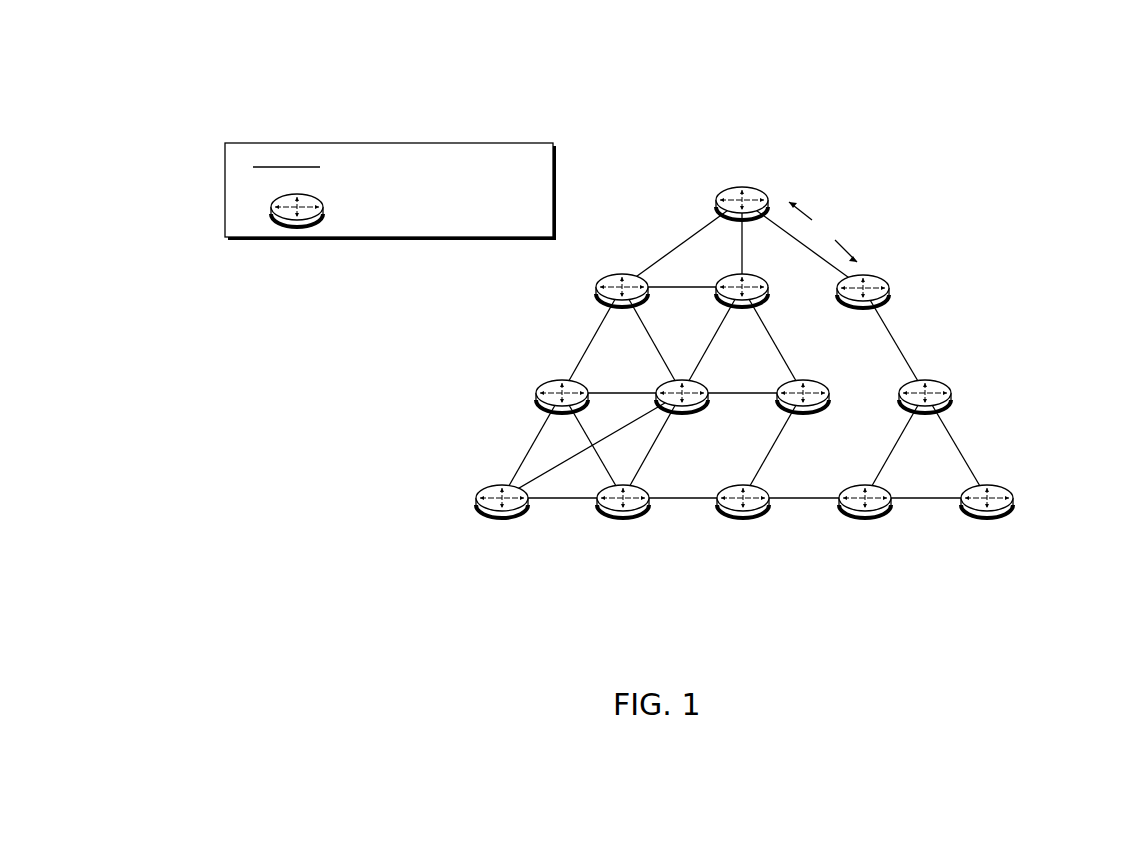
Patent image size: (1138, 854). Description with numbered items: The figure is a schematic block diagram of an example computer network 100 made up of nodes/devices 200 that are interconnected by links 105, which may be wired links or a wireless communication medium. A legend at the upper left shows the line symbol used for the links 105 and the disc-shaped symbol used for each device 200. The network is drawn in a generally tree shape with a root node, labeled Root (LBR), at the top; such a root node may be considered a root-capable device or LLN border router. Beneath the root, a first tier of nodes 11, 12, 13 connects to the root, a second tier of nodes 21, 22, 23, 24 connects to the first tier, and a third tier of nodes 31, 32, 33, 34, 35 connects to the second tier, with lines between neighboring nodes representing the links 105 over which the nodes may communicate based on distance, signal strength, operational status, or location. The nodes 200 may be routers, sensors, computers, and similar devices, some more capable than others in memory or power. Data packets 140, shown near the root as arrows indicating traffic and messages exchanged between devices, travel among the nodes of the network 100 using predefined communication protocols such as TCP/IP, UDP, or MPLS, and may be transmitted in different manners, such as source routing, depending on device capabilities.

The computer network 100 is at (1058, 75).
The links 105 is at (335, 167).
The nodes/devices 200 is at (349, 210).
The data packets 140 is at (848, 233).
The node 11 is at (622, 304).
The node 12 is at (742, 304).
The node 13 is at (863, 305).
The node 21 is at (562, 412).
The node 22 is at (682, 412).
The node 23 is at (803, 412).
The node 24 is at (925, 412).
The node 31 is at (502, 516).
The node 32 is at (623, 516).
The node 33 is at (743, 516).
The node 34 is at (865, 516).
The node 35 is at (987, 516).